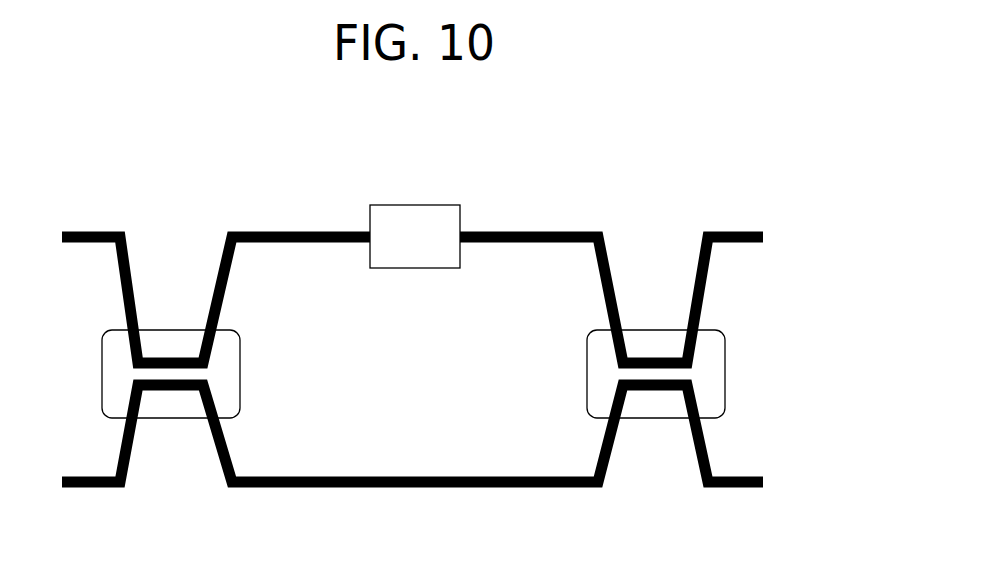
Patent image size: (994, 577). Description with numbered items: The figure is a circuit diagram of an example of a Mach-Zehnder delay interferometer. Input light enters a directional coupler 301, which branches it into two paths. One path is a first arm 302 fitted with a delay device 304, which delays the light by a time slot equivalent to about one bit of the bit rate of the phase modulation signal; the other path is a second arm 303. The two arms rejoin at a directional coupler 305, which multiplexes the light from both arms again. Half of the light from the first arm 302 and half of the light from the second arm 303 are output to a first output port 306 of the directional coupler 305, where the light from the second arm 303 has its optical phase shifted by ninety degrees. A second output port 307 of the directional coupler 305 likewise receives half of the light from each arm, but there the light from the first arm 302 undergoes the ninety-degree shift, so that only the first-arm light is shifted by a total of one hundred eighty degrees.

The directional coupler 301 is at (240, 364).
The first arm 302 is at (290, 231).
The second arm 303 is at (302, 477).
The delay device 304 is at (436, 205).
The directional coupler 305 is at (725, 364).
The first output port 306 is at (732, 232).
The second output port 307 is at (750, 478).